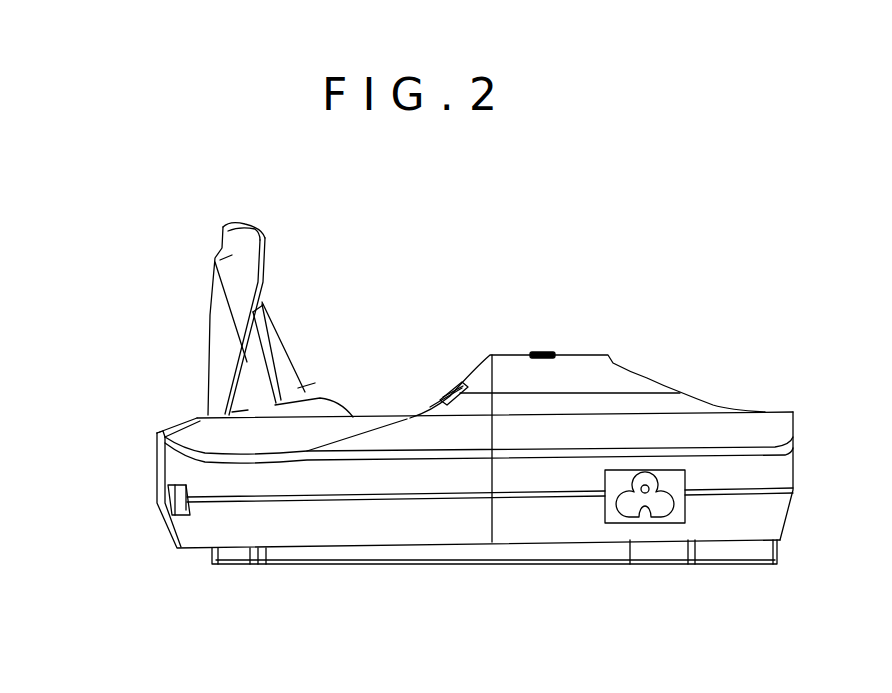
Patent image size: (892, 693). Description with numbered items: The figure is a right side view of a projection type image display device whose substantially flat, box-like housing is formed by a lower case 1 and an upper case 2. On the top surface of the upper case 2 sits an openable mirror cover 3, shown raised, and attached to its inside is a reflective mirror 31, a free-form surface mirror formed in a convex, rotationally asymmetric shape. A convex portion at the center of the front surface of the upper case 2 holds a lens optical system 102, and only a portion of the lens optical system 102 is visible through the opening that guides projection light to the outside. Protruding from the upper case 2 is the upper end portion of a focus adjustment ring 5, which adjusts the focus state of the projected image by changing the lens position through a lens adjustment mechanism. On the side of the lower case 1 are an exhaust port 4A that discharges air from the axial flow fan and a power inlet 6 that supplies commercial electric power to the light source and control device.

The lower case 1 is at (475, 483).
The upper case 2 is at (635, 377).
The mirror cover 3 is at (228, 238).
The reflective mirror 31 is at (268, 333).
The lens optical system 102 is at (432, 405).
The focus adjustment ring 5 is at (547, 352).
The exhaust port 4A is at (180, 500).
The power inlet 6 is at (657, 503).